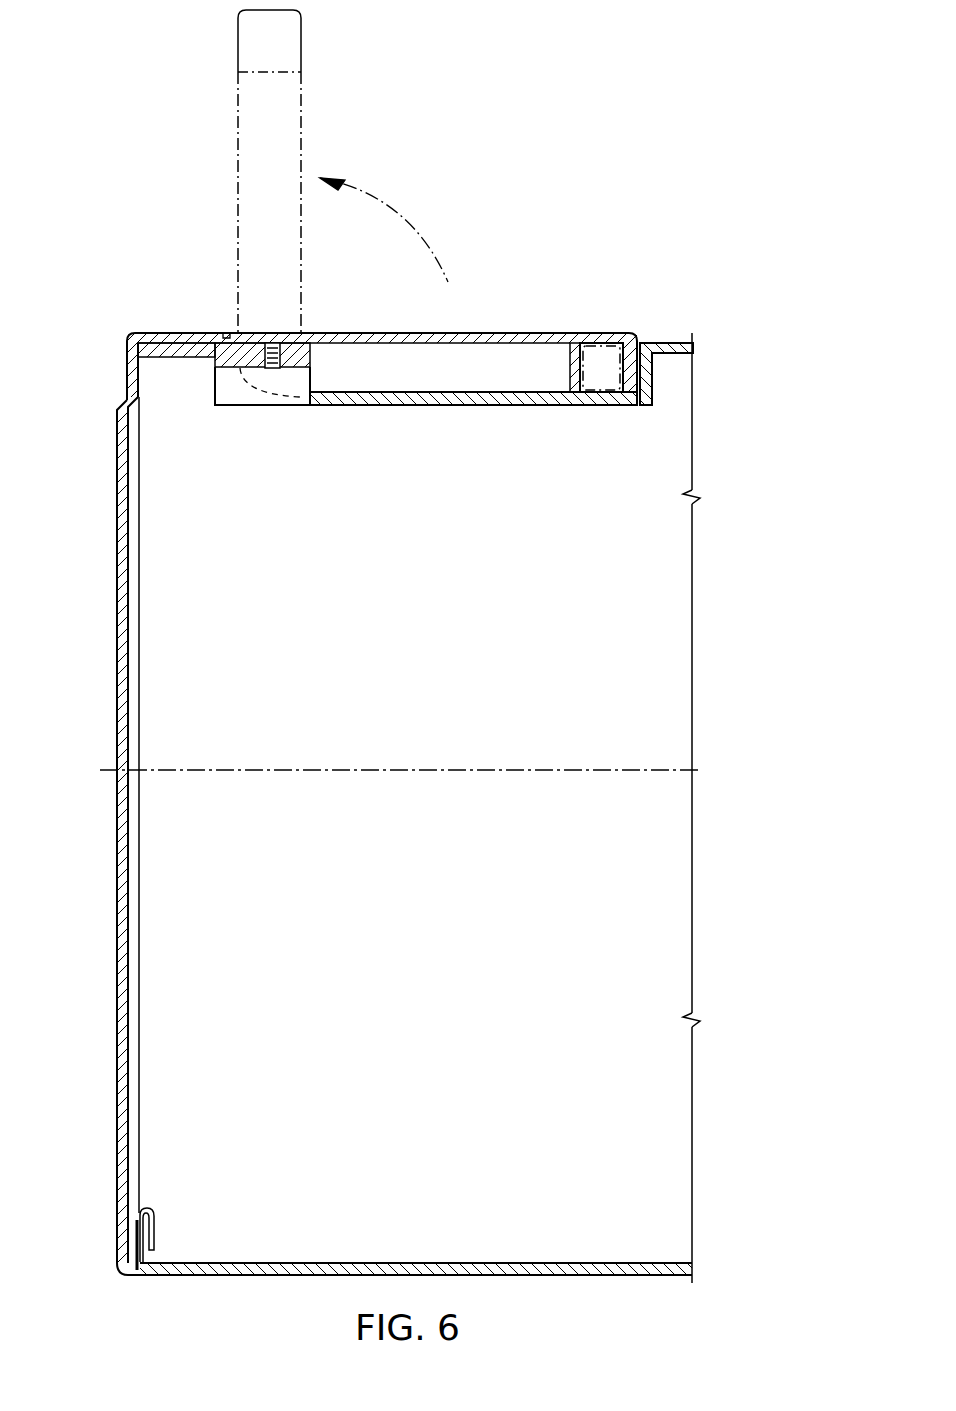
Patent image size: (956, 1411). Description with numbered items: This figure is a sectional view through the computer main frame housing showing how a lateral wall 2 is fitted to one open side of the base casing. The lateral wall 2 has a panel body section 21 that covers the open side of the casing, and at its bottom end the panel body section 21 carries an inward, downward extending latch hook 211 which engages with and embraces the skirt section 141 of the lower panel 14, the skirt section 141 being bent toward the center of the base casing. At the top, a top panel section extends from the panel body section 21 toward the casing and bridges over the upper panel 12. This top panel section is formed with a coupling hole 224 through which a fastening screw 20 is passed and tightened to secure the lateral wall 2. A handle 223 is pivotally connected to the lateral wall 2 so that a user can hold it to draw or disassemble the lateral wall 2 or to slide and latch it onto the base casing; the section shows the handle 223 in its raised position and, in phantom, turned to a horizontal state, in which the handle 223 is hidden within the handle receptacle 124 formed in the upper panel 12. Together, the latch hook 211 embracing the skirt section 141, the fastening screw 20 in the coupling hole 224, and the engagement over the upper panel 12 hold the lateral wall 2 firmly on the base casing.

The lateral wall 2 is at (115, 607).
The fastening screw 20 is at (268, 333).
The coupling hole 224 is at (283, 333).
The handle 223 is at (255, 78).
The handle receptacle 124 is at (631, 340).
The upper panel 12 is at (667, 342).
The panel body section 21 is at (120, 798).
The latch hook 211 is at (157, 1235).
The lower panel 14 is at (252, 1272).
The skirt section 141 is at (125, 1268).